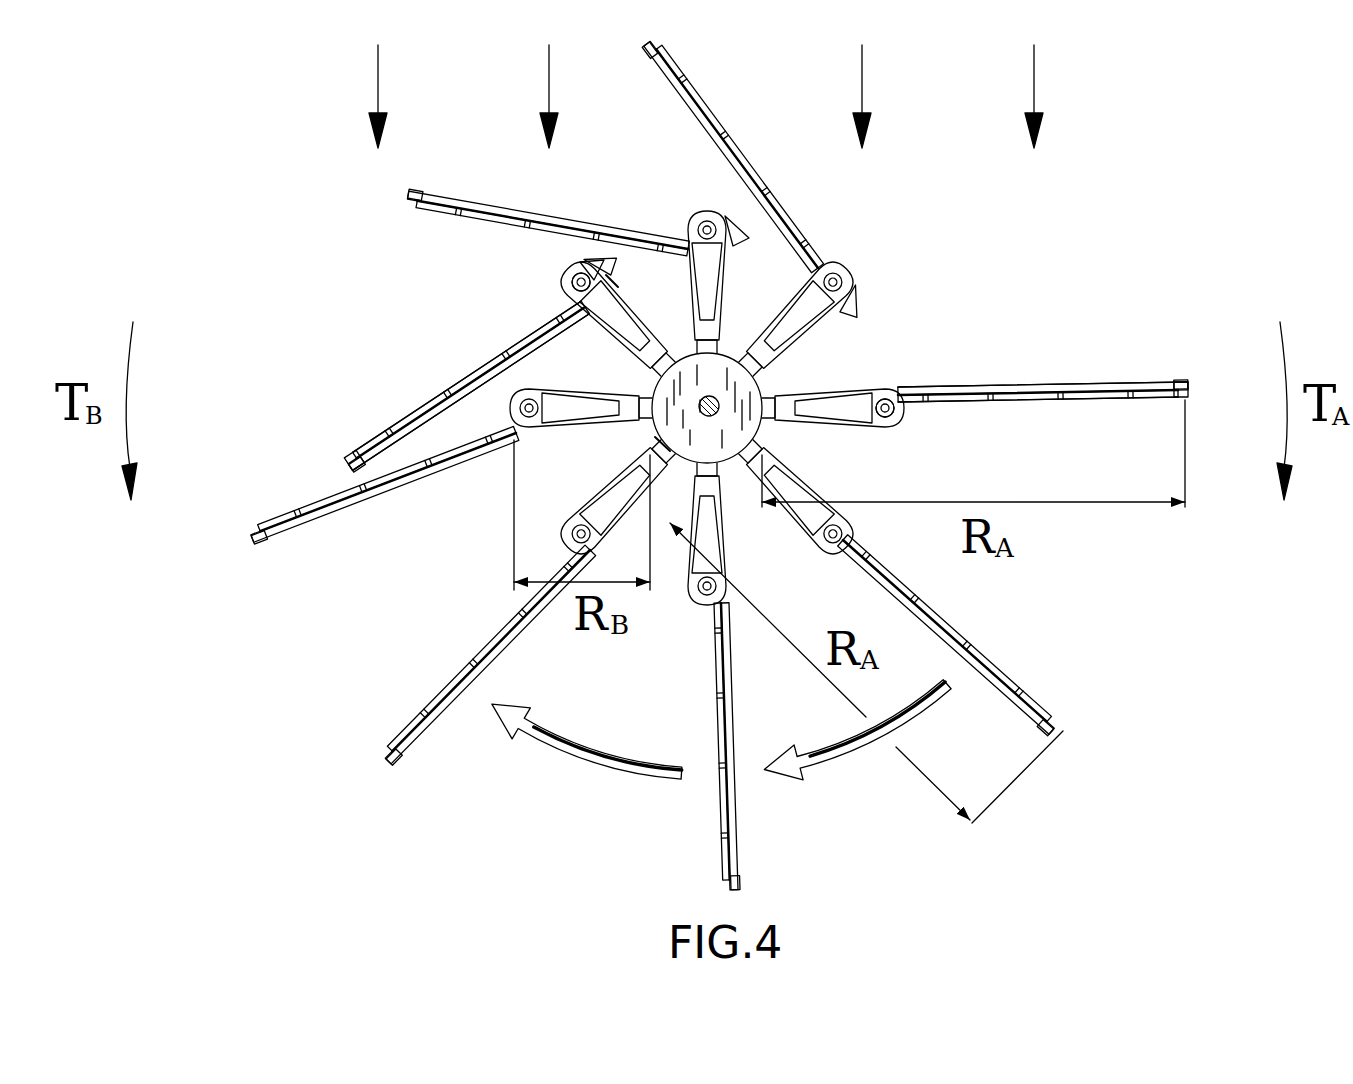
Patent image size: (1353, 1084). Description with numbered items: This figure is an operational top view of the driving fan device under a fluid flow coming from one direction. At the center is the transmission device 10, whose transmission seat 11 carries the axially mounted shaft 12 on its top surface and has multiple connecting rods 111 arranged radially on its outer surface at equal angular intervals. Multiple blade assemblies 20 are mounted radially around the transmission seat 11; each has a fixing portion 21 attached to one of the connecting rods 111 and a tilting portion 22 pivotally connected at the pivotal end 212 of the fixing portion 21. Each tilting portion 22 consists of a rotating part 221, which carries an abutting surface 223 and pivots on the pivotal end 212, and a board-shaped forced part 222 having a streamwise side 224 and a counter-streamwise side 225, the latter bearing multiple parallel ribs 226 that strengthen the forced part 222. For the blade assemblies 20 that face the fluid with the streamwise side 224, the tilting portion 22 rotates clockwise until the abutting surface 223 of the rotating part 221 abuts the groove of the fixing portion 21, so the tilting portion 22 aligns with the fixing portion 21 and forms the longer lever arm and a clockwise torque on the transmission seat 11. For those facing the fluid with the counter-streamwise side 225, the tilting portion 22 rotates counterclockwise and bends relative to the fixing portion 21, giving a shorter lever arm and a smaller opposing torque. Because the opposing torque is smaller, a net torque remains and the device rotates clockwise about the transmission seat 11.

The transmission device 10 is at (737, 477).
The transmission seat 11 is at (722, 415).
The shaft 12 is at (712, 400).
The blade assembly 20 is at (355, 302).
The fixing portion 21 is at (652, 328).
The tilting portion 22 is at (477, 338).
The connecting rod 111 is at (645, 440).
The pivotal end 212 is at (562, 286).
The rotating part 221 is at (602, 262).
The forced part 222 is at (385, 420).
The abutting surface 223 is at (620, 282).
The streamwise side 224 is at (538, 337).
The counter-streamwise side 225 is at (338, 458).
The rib 226 is at (452, 382).